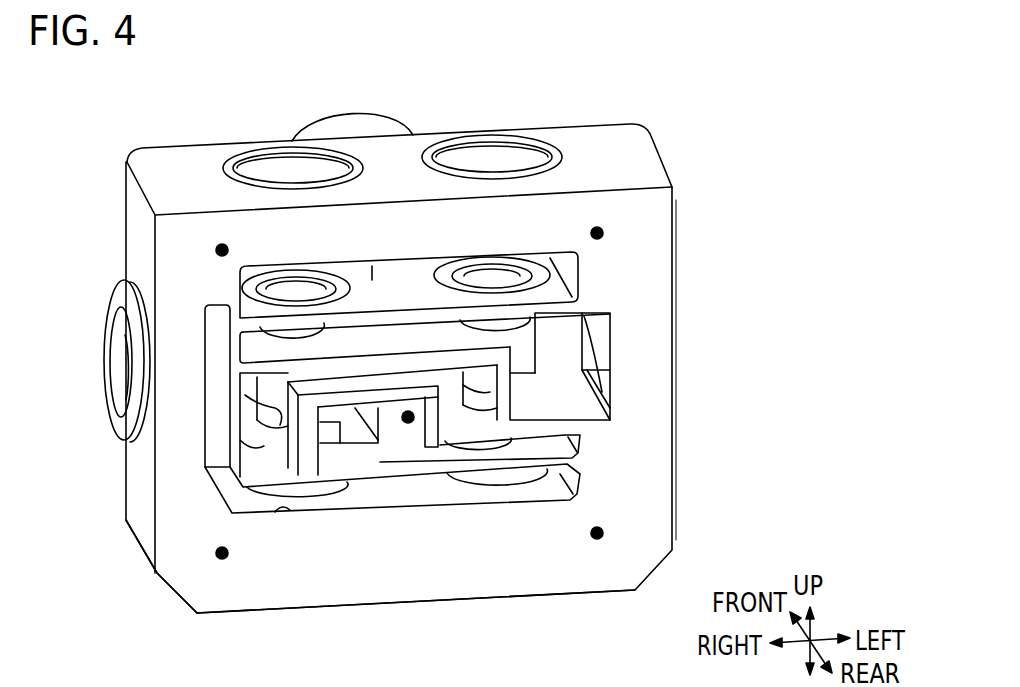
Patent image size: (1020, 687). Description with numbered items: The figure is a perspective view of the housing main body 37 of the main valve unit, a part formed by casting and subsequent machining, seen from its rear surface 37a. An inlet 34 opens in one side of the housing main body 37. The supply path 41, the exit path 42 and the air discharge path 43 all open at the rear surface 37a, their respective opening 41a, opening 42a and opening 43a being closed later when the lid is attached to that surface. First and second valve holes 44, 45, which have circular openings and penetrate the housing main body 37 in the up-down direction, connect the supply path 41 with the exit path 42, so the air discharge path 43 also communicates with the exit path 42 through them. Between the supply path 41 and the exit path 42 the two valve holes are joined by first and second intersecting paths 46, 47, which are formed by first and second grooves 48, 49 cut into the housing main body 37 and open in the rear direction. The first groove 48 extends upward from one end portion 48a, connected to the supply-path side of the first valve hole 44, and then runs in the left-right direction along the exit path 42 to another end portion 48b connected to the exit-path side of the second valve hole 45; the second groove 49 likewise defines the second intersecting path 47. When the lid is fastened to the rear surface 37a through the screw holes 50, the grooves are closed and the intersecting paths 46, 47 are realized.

The inlet 34 is at (122, 398).
The housing main body 37 is at (173, 160).
The rear surface 37a is at (183, 508).
The supply path 41 is at (368, 500).
The opening of the supply path 41a is at (284, 508).
The exit path 42 is at (568, 378).
The opening of the exit path 42a is at (612, 405).
The air discharge path 43 is at (392, 290).
The opening of the air discharge path 43a is at (384, 276).
The first valve hole 44 is at (287, 292).
The second valve hole 45 is at (502, 278).
The first intersecting path 46 is at (352, 384).
The second intersecting path 47 is at (540, 450).
The first groove 48 is at (386, 372).
The one end portion of the first groove 48a is at (250, 441).
The other end portion of the first groove 48b is at (465, 410).
The second groove 49 is at (430, 452).
The screw holes 50 is at (220, 246).